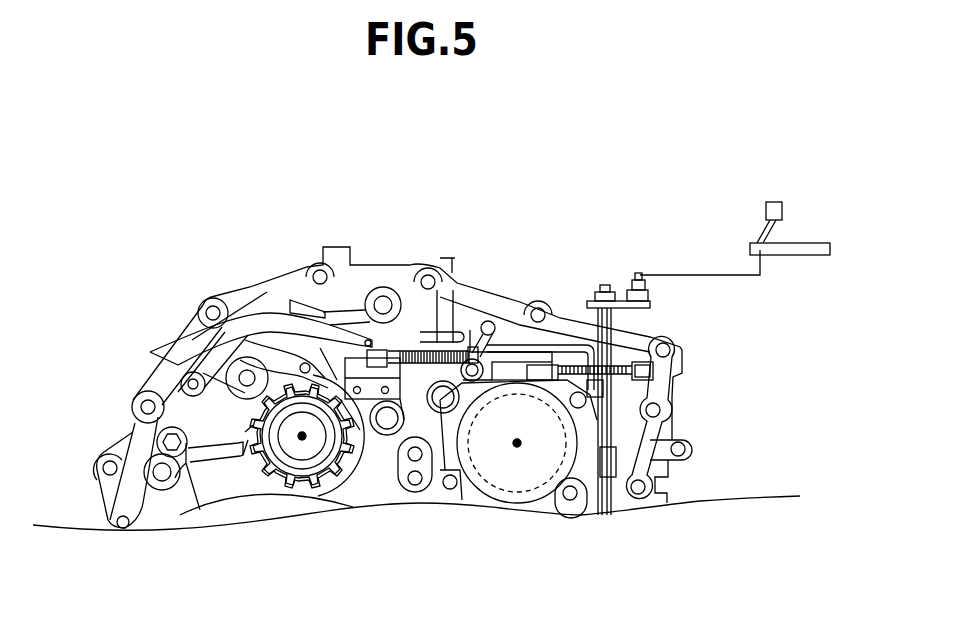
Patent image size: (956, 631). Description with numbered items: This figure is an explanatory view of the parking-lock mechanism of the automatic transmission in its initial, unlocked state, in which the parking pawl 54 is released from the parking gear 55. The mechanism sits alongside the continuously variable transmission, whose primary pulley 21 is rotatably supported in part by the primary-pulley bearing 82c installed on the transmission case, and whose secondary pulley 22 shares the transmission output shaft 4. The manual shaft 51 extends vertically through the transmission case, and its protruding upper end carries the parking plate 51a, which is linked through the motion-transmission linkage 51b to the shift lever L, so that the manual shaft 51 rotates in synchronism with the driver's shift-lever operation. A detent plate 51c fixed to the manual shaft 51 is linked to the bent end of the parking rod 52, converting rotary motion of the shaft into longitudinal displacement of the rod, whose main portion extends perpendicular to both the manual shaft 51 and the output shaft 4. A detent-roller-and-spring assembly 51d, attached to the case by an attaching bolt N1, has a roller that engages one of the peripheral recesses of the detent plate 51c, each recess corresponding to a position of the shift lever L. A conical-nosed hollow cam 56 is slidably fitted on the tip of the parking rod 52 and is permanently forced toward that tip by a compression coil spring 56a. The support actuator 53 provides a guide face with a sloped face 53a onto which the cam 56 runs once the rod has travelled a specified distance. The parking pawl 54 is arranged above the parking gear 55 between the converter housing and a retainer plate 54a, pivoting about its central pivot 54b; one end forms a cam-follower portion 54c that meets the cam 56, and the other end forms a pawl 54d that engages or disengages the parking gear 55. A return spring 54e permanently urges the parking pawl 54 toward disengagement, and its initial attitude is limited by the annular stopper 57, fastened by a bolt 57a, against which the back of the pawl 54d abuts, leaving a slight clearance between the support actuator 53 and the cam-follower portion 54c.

The transmission output shaft 4 is at (304, 440).
The secondary pulley 22 is at (313, 491).
The primary pulley 21 is at (520, 447).
The manual shaft 51 is at (605, 440).
The parking plate 51a is at (617, 297).
The motion-transmission linkage 51b is at (703, 274).
The detent plate 51c is at (617, 363).
The detent-roller-and-spring assembly 51d is at (512, 368).
The parking rod 52 is at (505, 355).
The support actuator 53 is at (375, 392).
The sloped face 53a is at (368, 343).
The parking pawl 54 is at (285, 327).
The retainer plate 54a is at (190, 408).
The central pivot 54b is at (238, 360).
The cam-follower portion 54c is at (360, 333).
The pawl 54d is at (243, 445).
The return spring 54e is at (193, 383).
The parking gear 55 is at (248, 440).
The cam 56 is at (398, 358).
The spring 56a is at (406, 350).
The stopper 57 is at (158, 420).
The bolt 57a is at (157, 440).
The primary-pulley bearing 82c is at (567, 432).
The attaching bolt N1 is at (470, 350).
The shift lever L is at (800, 230).